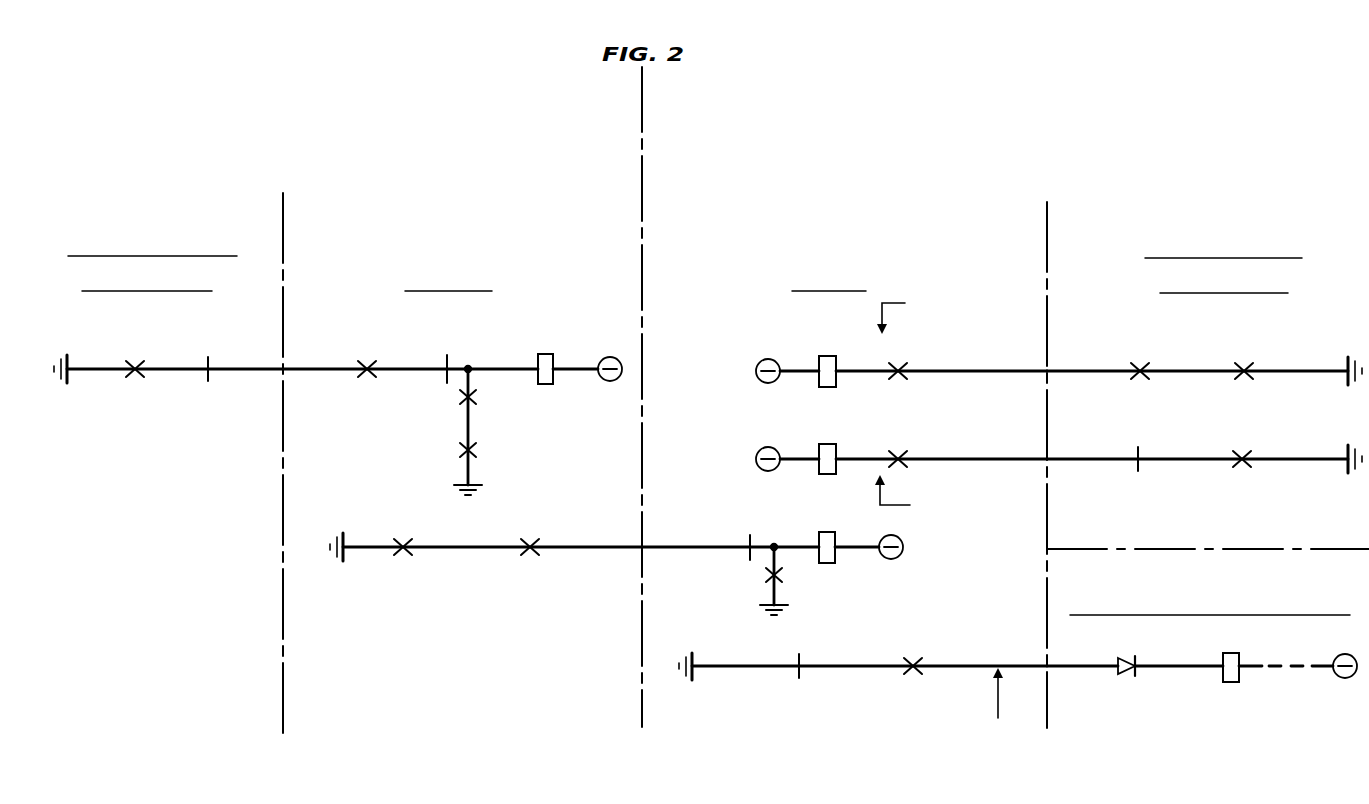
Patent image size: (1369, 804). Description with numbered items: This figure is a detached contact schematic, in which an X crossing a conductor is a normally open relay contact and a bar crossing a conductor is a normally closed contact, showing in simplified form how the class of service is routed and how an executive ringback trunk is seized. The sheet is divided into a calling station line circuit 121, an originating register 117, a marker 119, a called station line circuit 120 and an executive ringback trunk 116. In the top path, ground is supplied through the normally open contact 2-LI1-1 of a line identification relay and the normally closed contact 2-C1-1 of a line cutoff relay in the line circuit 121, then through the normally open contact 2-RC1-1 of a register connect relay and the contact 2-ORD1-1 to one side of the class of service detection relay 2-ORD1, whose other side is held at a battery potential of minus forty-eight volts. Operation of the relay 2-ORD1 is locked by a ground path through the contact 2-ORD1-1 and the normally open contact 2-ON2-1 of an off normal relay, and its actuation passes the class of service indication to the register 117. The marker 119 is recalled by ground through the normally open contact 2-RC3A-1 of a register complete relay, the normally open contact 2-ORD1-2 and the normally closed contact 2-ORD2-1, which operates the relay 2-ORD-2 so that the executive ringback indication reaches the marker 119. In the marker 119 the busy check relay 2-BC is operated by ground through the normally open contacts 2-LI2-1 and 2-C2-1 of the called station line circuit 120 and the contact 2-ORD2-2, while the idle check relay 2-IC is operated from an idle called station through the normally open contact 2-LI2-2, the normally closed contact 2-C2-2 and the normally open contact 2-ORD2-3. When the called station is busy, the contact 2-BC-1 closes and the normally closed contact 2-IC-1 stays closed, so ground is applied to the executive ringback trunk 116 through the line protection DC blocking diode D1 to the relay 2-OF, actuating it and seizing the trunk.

The line circuit 121 is at (169, 211).
The originating register 117 is at (469, 211).
The marker 119 is at (839, 211).
The called station line circuit 120 is at (1242, 211).
The executive ringback trunk circuit 116 is at (1242, 584).
The normally open contact of line identification relay 2-LI1-1 is at (133, 362).
The normally closed contact of line cutoff relay 2-C1-1 is at (219, 343).
The normally open contact of register connect relay 2-RC1-1 is at (367, 360).
The contact of class of service detection relay 2-ORD1-1 is at (455, 378).
The class of service detection relay 2-ORD1 is at (552, 343).
The normally open contact of off normal relay 2-ON2-1 is at (476, 450).
The normally open contact of register complete relay 2-RC3A-1 is at (407, 532).
The normally open contact of 2-ORD1 relay 2-ORD1-2 is at (544, 532).
The normally closed contact of 2-ORD2 relay 2-ORD2-1 is at (762, 558).
The 2-ORD2 relay 2-ORD-2 is at (826, 537).
The busy check relay 2-BC is at (838, 356).
The normally open contact of 2-ORD2 relay 2-ORD2-2 is at (903, 363).
The idle check relay 2-IC is at (838, 444).
The normally open contact of 2-ORD2 relay 2-ORD2-3 is at (903, 451).
The normally closed contact of idle check relay 2-IC-1 is at (806, 652).
The normally open contact of busy check relay 2-BC-1 is at (924, 652).
The normally open contact of called line cutoff relay 2-C2-1 is at (1140, 363).
The normally open contact of called line identification relay 2-LI2-1 is at (1258, 347).
The normally closed contact of called line cutoff relay 2-C2-2 is at (1148, 449).
The normally open contact of called line identification relay 2-LI2-2 is at (1262, 449).
The line protection DC blocking diode D1 is at (1132, 676).
The 2-OF relay 2-OF is at (1246, 650).